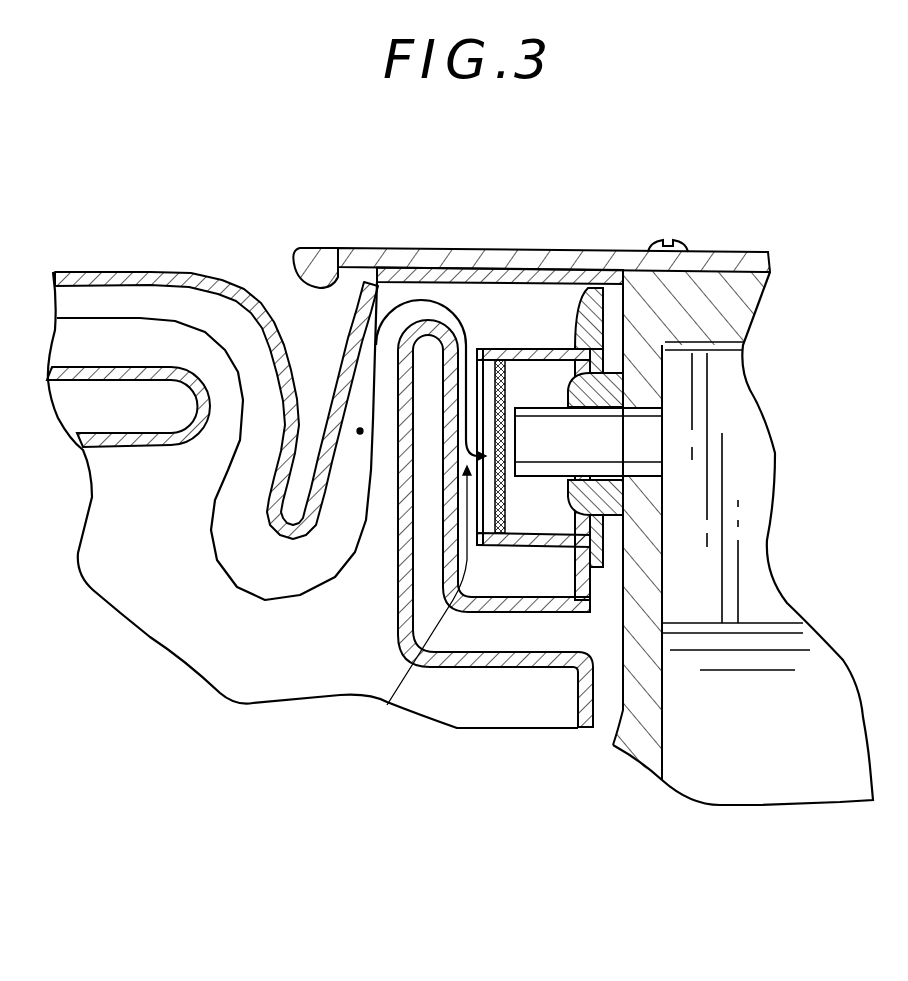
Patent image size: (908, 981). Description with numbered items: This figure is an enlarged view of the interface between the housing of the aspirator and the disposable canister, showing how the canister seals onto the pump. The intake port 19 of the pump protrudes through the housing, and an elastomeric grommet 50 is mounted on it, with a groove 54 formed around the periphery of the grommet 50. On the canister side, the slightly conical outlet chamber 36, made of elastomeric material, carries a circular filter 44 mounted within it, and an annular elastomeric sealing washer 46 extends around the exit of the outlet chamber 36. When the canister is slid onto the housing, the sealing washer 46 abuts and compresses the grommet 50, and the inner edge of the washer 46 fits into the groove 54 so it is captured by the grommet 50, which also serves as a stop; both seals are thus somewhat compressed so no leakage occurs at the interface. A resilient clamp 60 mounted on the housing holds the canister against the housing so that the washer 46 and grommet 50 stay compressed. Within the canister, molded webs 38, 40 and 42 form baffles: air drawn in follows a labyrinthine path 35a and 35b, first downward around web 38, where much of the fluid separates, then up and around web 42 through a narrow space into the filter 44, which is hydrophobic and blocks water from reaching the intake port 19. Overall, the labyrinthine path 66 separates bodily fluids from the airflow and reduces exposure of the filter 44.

The intake port 19 is at (633, 440).
The labyrinthine path 35a is at (360, 432).
The labyrinthine path 35b is at (408, 603).
The outlet chamber 36 is at (475, 287).
The web 38 is at (322, 352).
The web 40 is at (150, 405).
The web 42 is at (510, 635).
The filter 44 is at (440, 278).
The sealing washer 46 is at (588, 290).
The grommet 50 is at (573, 347).
The groove 54 is at (572, 500).
The clamp 60 is at (360, 258).
The labyrinthine path 66 is at (262, 602).